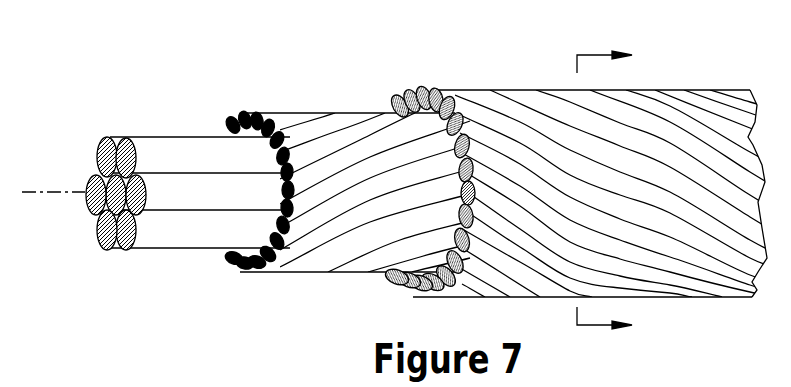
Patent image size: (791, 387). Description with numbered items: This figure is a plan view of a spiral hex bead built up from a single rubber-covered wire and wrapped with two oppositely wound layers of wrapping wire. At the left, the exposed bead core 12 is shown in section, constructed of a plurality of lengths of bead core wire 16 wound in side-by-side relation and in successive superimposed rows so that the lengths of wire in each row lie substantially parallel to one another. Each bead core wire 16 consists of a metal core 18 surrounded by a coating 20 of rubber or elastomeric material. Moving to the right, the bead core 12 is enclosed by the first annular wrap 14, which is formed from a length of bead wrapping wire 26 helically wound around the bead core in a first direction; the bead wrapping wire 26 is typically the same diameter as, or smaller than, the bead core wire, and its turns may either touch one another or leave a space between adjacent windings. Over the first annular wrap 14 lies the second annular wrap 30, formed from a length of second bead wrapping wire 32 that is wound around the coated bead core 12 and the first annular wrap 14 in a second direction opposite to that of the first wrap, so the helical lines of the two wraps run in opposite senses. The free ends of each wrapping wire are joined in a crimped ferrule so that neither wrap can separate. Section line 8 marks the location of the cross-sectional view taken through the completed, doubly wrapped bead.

The section line 8- 8 is at (615, 190).
The bead core 12 is at (158, 200).
The first annular wrap 14 is at (322, 90).
The bead core wire 16 is at (157, 238).
The metal core 18 is at (98, 228).
The coating 20 is at (102, 249).
The bead wrapping wire 26 is at (287, 127).
The second annular wrap 30 is at (683, 74).
The second bead wrapping wire 32 is at (462, 102).